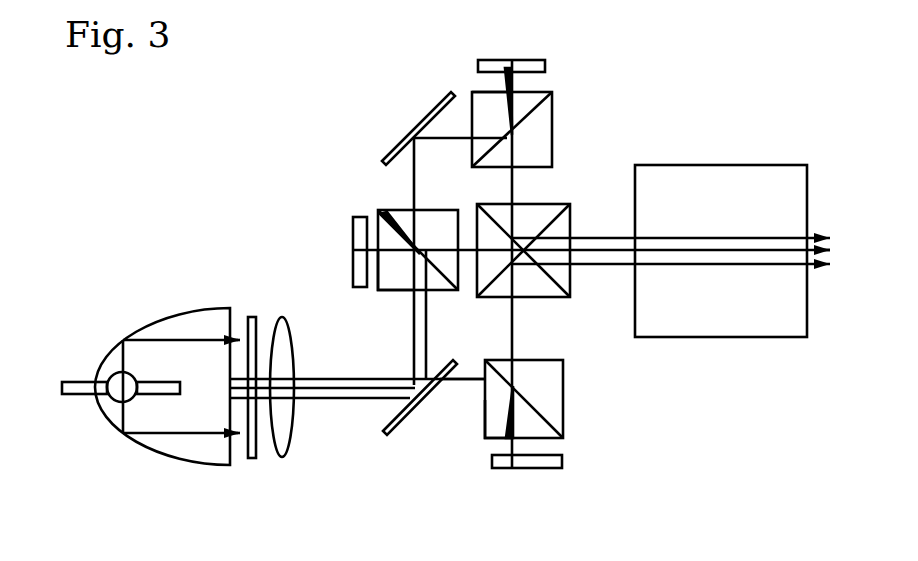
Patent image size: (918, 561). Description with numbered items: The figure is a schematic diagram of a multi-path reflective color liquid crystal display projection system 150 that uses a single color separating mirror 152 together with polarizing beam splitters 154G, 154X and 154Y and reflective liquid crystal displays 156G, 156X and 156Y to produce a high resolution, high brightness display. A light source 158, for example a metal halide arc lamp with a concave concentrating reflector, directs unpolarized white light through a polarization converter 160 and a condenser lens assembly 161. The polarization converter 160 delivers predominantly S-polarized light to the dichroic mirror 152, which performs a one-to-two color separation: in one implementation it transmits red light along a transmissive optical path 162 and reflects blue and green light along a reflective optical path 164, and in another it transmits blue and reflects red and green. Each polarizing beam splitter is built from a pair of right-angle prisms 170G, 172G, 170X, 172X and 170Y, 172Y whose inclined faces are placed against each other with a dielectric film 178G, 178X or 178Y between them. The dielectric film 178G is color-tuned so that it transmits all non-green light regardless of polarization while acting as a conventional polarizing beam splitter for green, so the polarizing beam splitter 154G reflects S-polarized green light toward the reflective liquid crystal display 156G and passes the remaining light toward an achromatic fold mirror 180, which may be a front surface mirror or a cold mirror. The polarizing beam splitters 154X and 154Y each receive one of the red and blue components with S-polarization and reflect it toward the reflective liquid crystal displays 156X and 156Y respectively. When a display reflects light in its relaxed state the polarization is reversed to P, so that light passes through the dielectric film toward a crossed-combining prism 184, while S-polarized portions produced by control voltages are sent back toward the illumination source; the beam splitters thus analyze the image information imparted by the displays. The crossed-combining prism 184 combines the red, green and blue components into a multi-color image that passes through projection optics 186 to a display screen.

The multi-path reflective color liquid crystal display projection system 150 is at (185, 137).
The color separating mirror 152 is at (385, 425).
The polarizing beam splitter 154G is at (366, 207).
The polarizing beam splitter 154X is at (549, 125).
The polarizing beam splitter 154Y is at (559, 419).
The reflective liquid crystal display 156G is at (351, 250).
The reflective liquid crystal display 156X is at (532, 58).
The reflective liquid crystal display 156Y is at (548, 470).
The light source 158 is at (145, 455).
The polarization converter 160 is at (258, 452).
The condenser lens assembly 161 is at (283, 445).
The transmissive optical path 162 is at (465, 380).
The reflective optical path 164 is at (448, 322).
The right-angle prism 170G is at (433, 222).
The right-angle prism 170X is at (550, 138).
The right-angle prism 170Y is at (553, 380).
The right-angle prism 172G is at (398, 282).
The right-angle prism 172X is at (480, 98).
The right-angle prism 172Y is at (493, 423).
The dielectric film 178G is at (403, 222).
The dielectric film 178X is at (532, 103).
The dielectric film 178Y is at (522, 393).
The achromatic fold mirror 180 is at (424, 120).
The crossed-combining prism 184 is at (570, 279).
The projection optics 186 is at (725, 325).